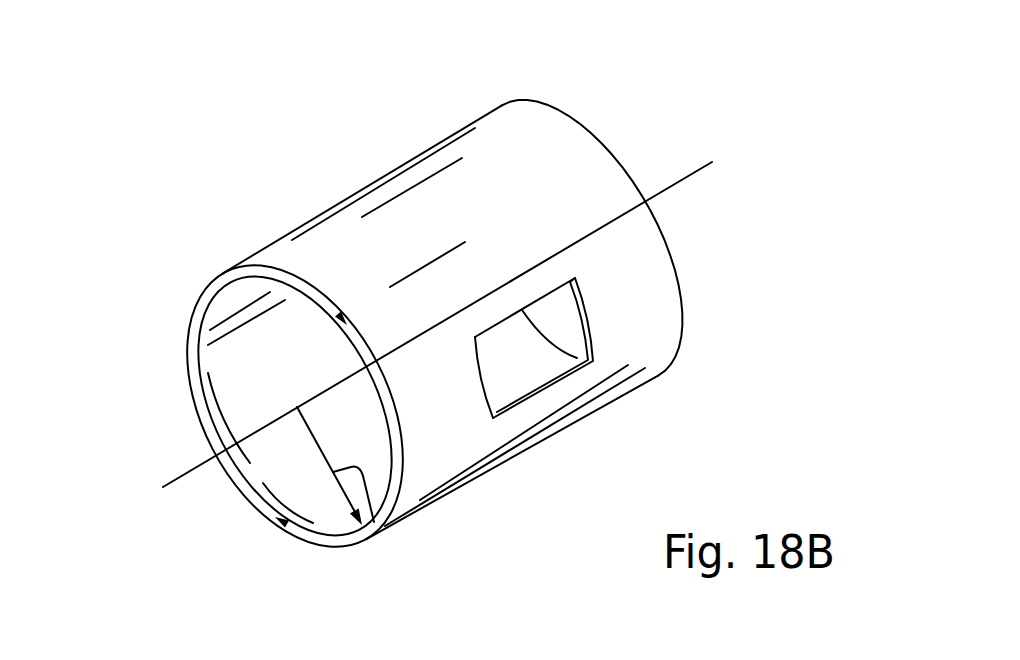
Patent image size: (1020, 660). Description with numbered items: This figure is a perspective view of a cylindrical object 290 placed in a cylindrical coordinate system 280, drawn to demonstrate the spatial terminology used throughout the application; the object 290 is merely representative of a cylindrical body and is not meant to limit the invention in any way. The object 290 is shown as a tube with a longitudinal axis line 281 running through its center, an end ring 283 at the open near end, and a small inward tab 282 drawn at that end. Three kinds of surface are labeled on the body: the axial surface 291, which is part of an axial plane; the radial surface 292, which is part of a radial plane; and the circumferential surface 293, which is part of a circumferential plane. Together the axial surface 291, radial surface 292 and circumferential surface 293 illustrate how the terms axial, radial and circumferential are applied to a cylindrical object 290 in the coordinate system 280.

The cylindrical coordinate system 280 is at (605, 112).
The longitudinal axis 281 is at (178, 481).
The inward tab 282 is at (385, 520).
The end ring flange 283 is at (195, 293).
The cylindrical object 290 is at (470, 107).
The axial surface 291 is at (558, 377).
The radial surface 292 is at (313, 538).
The circumferential surface 293 is at (410, 208).